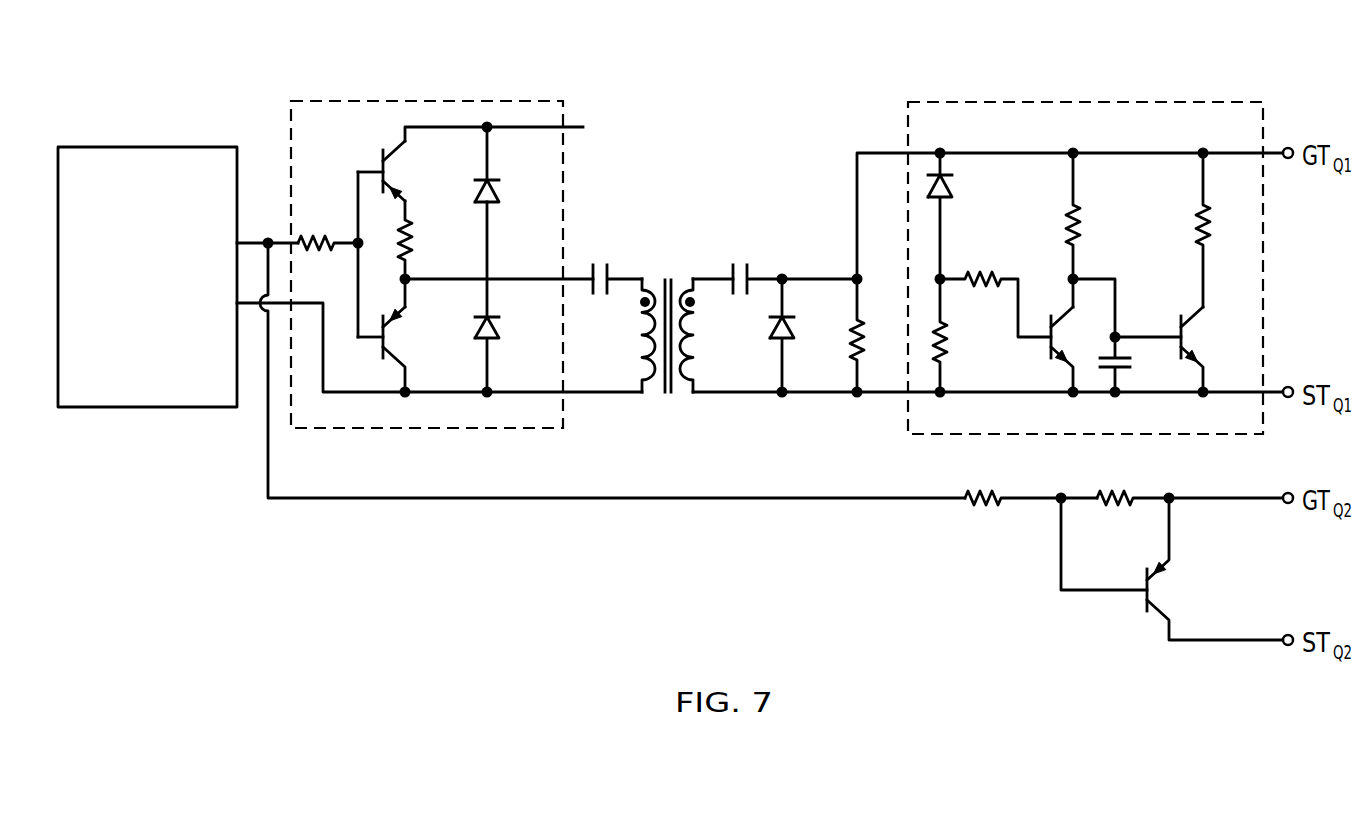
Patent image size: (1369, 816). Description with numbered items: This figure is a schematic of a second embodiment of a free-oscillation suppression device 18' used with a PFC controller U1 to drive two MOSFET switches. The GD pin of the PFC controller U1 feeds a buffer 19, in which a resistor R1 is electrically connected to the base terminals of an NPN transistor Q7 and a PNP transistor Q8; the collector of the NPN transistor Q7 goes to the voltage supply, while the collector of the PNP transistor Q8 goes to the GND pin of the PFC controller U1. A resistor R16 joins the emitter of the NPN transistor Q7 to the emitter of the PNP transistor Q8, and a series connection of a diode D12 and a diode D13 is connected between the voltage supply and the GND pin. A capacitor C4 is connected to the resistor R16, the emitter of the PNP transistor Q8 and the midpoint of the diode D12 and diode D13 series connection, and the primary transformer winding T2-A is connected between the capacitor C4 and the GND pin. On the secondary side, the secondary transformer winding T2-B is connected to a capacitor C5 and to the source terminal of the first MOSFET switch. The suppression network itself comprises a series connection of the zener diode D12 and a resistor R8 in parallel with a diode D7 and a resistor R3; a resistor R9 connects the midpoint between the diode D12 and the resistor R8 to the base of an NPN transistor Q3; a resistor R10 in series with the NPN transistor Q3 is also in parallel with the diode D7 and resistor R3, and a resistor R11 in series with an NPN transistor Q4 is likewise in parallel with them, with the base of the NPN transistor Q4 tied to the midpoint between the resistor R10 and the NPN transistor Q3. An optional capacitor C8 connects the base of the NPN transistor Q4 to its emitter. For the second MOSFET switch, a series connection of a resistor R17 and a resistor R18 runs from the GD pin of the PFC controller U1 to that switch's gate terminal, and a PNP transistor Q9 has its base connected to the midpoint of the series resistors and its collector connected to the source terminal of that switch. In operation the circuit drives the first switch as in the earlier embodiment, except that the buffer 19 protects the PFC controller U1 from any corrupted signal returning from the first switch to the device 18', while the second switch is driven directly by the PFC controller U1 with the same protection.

The buffer 19 is at (415, 101).
The free-oscillation suppression device 18' is at (1085, 229).
The PFC controller U1 is at (157, 295).
The resistor R1 is at (328, 229).
The NPN transistor Q7 is at (395, 171).
The PNP transistor Q8 is at (395, 349).
The resistor R16 is at (426, 240).
The diode D12 is at (739, 216).
The diode D13 is at (511, 352).
The capacitor C4 is at (614, 262).
The capacitor C5 is at (792, 262).
The primary transformer winding T2-A is at (630, 335).
The secondary transformer winding T2-B is at (712, 335).
The diode D7 is at (799, 335).
The resistor R3 is at (875, 335).
The resistor R8 is at (957, 335).
The resistor R9 is at (995, 290).
The resistor R10 is at (1094, 216).
The resistor R11 is at (1223, 230).
The NPN transistor Q3 is at (1053, 341).
The NPN transistor Q4 is at (1183, 341).
The capacitor C8 is at (1131, 364).
The resistor R17 is at (1031, 481).
The resistor R18 is at (1191, 481).
The PNP transistor Q9 is at (1217, 569).